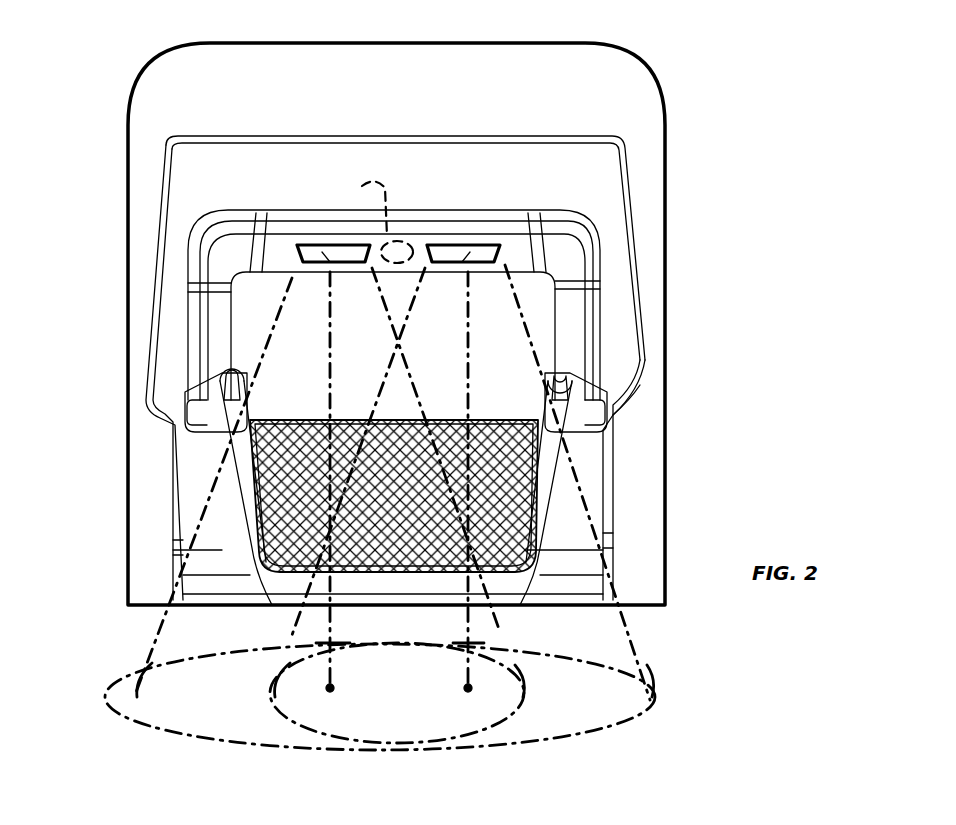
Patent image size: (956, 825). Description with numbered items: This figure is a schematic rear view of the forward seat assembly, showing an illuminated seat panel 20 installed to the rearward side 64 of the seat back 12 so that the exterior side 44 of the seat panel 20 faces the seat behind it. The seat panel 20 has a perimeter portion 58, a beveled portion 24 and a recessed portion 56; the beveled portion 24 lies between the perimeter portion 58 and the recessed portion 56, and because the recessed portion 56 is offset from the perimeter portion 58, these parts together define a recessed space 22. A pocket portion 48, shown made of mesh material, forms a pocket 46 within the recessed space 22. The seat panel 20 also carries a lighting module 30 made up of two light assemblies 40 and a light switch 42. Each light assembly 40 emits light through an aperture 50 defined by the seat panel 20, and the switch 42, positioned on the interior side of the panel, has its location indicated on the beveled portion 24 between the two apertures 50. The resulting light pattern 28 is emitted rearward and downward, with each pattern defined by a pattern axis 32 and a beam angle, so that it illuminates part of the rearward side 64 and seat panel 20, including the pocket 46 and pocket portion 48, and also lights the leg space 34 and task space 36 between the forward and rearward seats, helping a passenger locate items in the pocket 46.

The seat back 12 is at (715, 306).
The seat panel 20 is at (648, 189).
The recessed space 22 is at (300, 353).
The beveled portion 24 is at (245, 243).
The light pattern 28 is at (114, 657).
The lighting module 30 is at (404, 190).
The pattern axis 32 is at (398, 482).
The leg space 34 is at (404, 695).
The task space 36 is at (409, 501).
The light assembly 40 is at (308, 243).
The light switch 42 is at (373, 219).
The exterior side of seat panel 44 is at (178, 153).
The pocket 46 is at (475, 406).
The pocket portion 48 is at (268, 500).
The aperture 50 is at (321, 263).
The recessed portion 56 is at (520, 296).
The perimeter portion 58 is at (452, 163).
The rearward side of seat back 64 is at (648, 435).